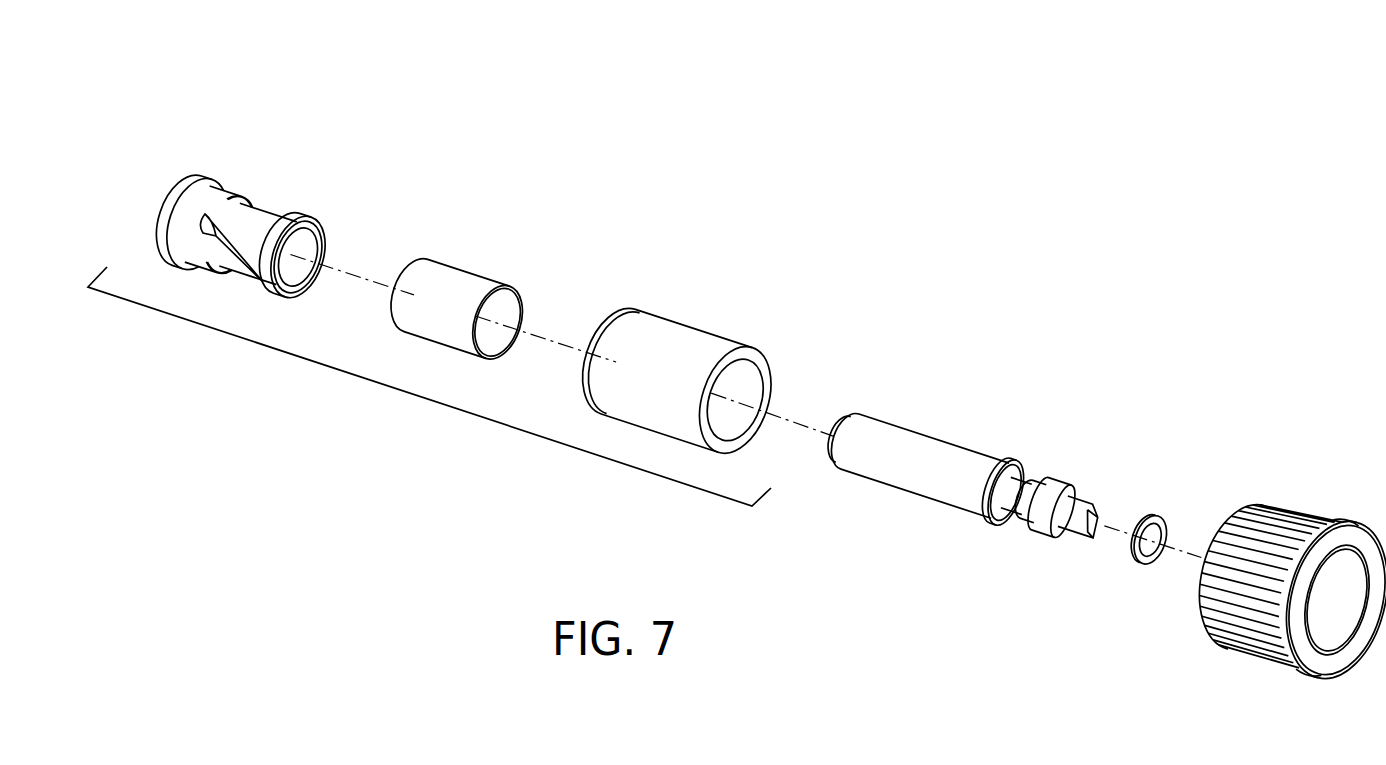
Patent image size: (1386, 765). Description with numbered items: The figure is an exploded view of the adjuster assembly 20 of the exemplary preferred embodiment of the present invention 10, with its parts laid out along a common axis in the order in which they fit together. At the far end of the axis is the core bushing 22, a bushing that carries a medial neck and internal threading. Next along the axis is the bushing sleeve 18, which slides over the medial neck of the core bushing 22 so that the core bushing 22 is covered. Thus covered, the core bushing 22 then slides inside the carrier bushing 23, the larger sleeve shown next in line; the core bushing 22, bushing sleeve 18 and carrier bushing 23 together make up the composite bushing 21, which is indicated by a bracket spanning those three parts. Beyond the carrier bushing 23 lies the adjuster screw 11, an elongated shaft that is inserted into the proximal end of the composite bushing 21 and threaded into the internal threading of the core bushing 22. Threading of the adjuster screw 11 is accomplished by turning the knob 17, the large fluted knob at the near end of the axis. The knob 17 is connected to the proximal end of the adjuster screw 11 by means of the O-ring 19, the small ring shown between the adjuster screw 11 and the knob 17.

The present invention 10 is at (487, 110).
The adjuster assembly 20 is at (948, 175).
The core bushing 22 is at (254, 204).
The bushing sleeve 18 is at (474, 275).
The carrier bushing 23 is at (695, 329).
The adjuster screw 11 is at (942, 438).
The O-ring 19 is at (1158, 514).
The knob 17 is at (1283, 502).
The composite bushing 21 is at (417, 397).